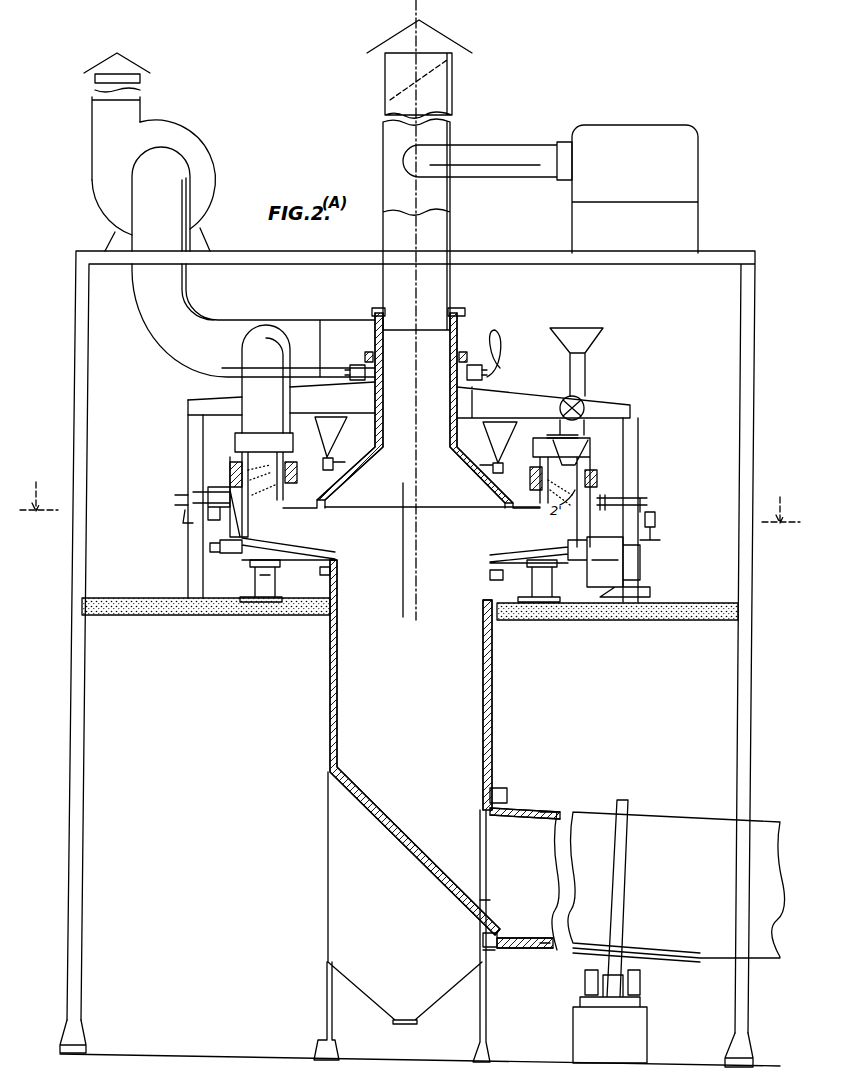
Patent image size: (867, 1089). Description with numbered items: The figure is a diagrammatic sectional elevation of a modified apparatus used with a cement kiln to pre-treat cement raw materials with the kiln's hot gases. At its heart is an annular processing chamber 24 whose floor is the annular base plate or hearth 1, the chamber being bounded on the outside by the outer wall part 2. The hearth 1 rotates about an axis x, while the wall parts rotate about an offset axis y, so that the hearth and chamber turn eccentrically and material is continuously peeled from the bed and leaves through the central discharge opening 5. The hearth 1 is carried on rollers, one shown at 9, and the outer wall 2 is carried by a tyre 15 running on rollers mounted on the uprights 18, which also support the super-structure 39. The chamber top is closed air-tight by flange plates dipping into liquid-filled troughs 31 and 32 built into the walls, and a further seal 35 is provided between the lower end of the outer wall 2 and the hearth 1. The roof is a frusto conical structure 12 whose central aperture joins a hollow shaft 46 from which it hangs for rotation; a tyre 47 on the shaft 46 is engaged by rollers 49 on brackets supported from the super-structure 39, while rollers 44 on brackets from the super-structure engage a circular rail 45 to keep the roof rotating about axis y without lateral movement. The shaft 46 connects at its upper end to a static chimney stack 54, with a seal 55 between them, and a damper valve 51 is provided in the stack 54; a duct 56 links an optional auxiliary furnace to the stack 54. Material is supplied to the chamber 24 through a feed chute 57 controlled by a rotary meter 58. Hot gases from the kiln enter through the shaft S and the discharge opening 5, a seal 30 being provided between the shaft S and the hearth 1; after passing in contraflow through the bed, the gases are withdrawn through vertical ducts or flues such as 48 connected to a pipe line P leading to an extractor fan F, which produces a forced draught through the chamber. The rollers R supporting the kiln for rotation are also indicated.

The extractor fan F is at (141, 152).
The pipe line P is at (253, 320).
The damper valve 51 is at (415, 69).
The chimney stack 54 is at (402, 310).
The duct 56 is at (550, 189).
The seal 55 is at (404, 303).
The tyre 47 is at (355, 356).
The rollers 49 is at (480, 355).
The hollow shaft 46 is at (411, 410).
The super-structure 39 is at (426, 400).
The vertical duct or flue 48 is at (252, 379).
The feed chute 57 is at (576, 350).
The rotary meter 58 is at (556, 417).
The annular processing chamber 24 is at (421, 481).
The tyre 15 is at (200, 499).
The rollers 44 is at (416, 445).
The frusto conical structure 12 is at (460, 477).
The circular rail 45 is at (474, 490).
The liquid filled trough 31 is at (521, 482).
The liquid filled trough 32 is at (628, 506).
The uprights 18 is at (411, 501).
The seal 35 is at (430, 555).
The roller 9 is at (400, 581).
The central discharge opening 5 is at (384, 550).
The axis x is at (389, 583).
The axis y is at (425, 602).
The outer wall part 2 is at (563, 537).
The base plate or hearth 1 is at (526, 540).
The seal 30 is at (411, 576).
The shaft S is at (429, 811).
The rollers R is at (662, 931).